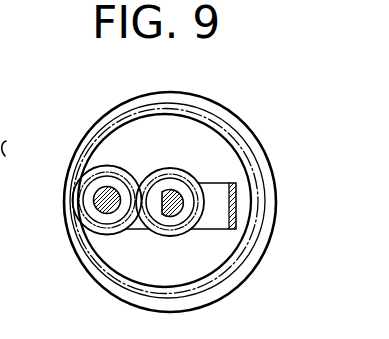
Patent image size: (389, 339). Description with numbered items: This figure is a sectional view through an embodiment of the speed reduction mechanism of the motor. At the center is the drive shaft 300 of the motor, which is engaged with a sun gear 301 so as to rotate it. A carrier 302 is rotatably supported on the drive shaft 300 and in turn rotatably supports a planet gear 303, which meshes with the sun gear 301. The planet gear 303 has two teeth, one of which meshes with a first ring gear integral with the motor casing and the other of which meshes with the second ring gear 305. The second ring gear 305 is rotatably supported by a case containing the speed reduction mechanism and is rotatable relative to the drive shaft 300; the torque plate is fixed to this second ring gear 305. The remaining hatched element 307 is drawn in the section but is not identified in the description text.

The drive shaft 300 is at (169, 191).
The sun gear 301 is at (175, 221).
The carrier 302 is at (231, 183).
The planet gear 303 is at (113, 222).
The second ring gear 305 is at (233, 125).
The conductor 307 is at (94, 194).